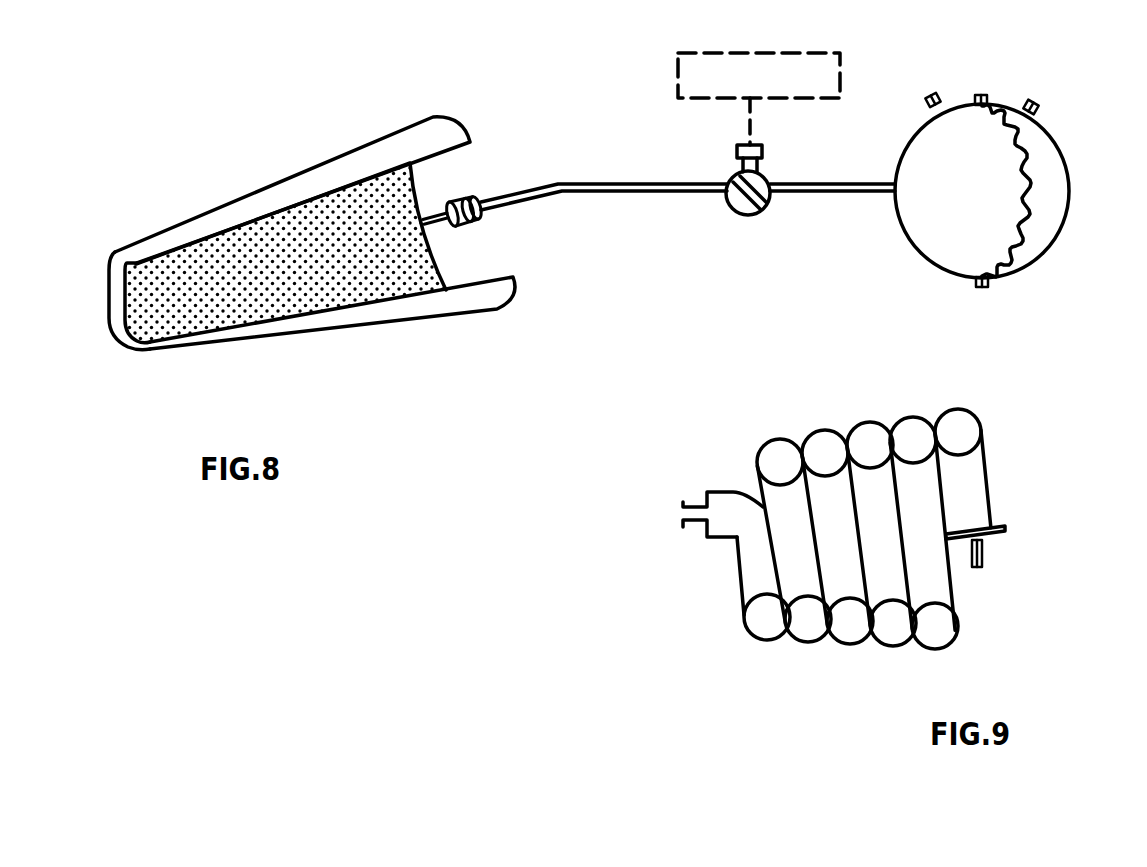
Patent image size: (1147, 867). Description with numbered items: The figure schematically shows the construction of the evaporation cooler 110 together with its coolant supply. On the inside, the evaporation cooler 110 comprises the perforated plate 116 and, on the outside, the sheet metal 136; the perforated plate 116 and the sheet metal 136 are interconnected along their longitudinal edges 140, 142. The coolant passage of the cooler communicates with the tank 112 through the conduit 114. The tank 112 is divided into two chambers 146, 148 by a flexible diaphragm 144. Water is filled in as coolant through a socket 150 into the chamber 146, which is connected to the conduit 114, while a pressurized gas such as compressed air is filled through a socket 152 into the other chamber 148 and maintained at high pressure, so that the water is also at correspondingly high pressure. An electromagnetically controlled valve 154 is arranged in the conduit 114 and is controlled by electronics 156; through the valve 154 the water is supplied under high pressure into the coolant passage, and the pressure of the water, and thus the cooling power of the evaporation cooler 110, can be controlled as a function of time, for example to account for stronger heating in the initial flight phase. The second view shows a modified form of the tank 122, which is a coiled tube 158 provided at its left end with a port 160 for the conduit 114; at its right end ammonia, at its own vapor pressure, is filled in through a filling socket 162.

In FIG. 8, the evaporation cooler 110 is at (222, 225).
In FIG. 8, the tank 112 is at (1017, 270).
In FIG. 8, the conduit 114 is at (584, 193).
In FIG. 8, the perforated plate 116 is at (147, 310).
In FIG. 9, the tank 122 is at (837, 427).
In FIG. 8, the sheet metal 136 is at (160, 245).
In FIG. 8, the longitudinal edge 140 is at (444, 136).
In FIG. 8, the longitudinal edge 142 is at (473, 278).
In FIG. 8, the flexible diaphragm 144 is at (1023, 168).
In FIG. 8, the chamber 146 is at (933, 237).
In FIG. 8, the chamber 148 is at (1043, 223).
In FIG. 8, the socket 150 is at (936, 90).
In FIG. 8, the socket 152 is at (1036, 112).
In FIG. 8, the electromagnetically controlled valve 154 is at (760, 185).
In FIG. 8, the electronics 156 is at (832, 80).
In FIG. 9, the coiled tube 158 is at (772, 453).
In FIG. 9, the port 160 is at (687, 527).
In FIG. 9, the filling socket 162 is at (985, 553).